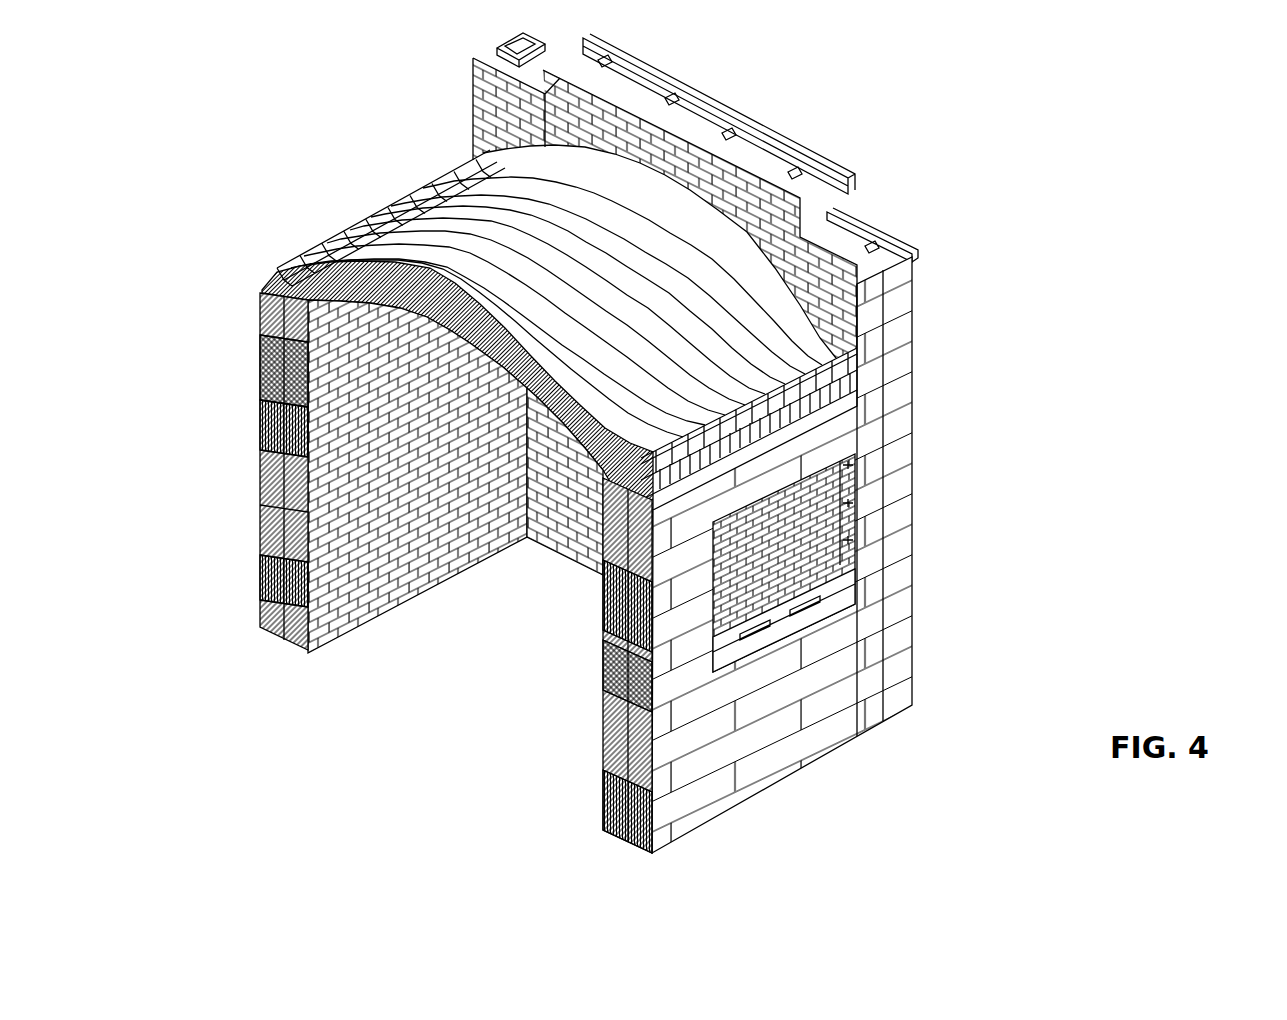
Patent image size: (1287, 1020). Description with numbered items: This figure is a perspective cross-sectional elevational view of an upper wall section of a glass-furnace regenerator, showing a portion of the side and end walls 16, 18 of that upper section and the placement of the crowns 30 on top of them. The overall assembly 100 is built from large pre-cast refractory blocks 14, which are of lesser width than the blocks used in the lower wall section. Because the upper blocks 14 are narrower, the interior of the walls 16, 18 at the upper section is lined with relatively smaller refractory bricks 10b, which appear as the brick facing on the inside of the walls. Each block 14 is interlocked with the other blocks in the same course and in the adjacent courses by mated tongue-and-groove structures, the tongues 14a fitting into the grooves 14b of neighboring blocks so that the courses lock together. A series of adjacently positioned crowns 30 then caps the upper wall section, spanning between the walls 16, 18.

The masonry structure 100 is at (621, 443).
The refractory bricks 10b is at (557, 503).
The pre-cast refractory blocks 14 is at (262, 433).
The tongues 14a is at (263, 594).
The grooves 14b is at (262, 373).
The side walls 16 is at (250, 533).
The end walls 18 is at (918, 337).
The crowns 30 is at (507, 160).